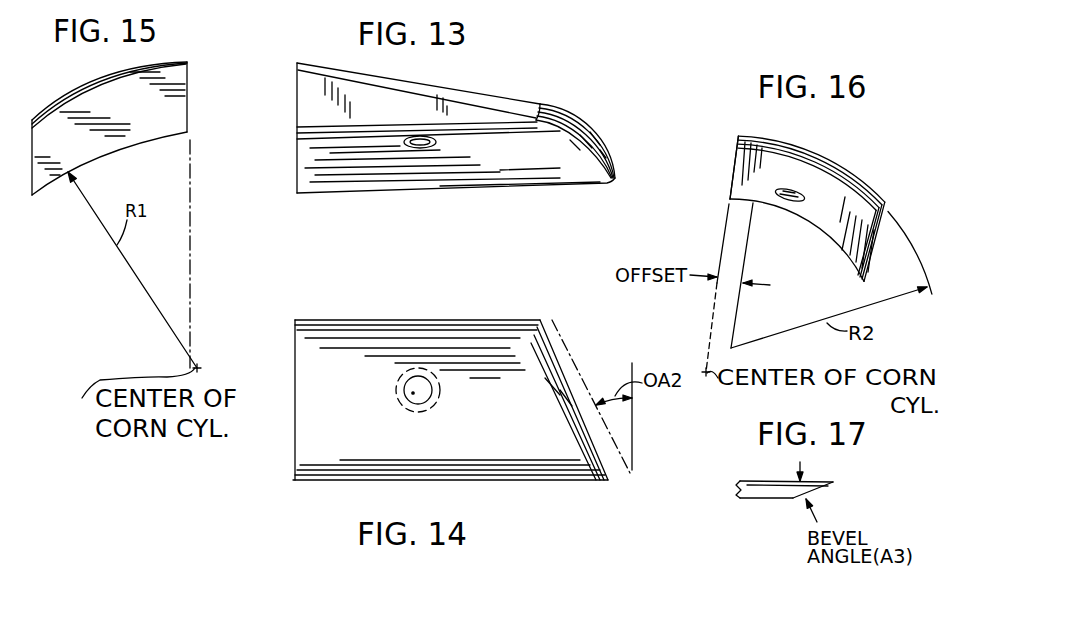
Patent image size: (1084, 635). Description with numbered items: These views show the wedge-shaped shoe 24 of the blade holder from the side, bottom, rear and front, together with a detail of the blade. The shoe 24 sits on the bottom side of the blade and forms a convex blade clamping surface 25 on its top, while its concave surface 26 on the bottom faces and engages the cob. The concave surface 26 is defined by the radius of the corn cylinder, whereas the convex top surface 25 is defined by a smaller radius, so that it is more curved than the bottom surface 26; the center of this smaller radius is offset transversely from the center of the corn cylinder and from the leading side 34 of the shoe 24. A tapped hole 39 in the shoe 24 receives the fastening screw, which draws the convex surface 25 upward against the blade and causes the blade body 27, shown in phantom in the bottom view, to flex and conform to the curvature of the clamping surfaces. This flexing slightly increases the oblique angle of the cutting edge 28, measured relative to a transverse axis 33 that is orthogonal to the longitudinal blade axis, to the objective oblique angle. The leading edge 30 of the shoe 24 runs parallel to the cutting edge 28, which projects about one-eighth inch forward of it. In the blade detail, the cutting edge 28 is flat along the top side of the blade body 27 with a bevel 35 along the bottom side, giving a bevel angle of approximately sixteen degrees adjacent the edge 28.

In FIG. 13, the shoe 24 is at (458, 150).
In FIG. 14, the shoe 24 is at (463, 401).
In FIG. 13, the convex blade clamping surface 25 is at (413, 83).
In FIG. 16, the convex blade clamping surface 25 is at (858, 179).
In FIG. 15, the concave surface 26 is at (42, 188).
In FIG. 13, the concave surface 26 is at (513, 153).
In FIG. 14, the concave surface 26 is at (343, 450).
In FIG. 16, the concave surface 26 is at (815, 201).
In FIG. 14, the blade body 27 is at (627, 481).
In FIG. 17, the blade body 27 is at (752, 499).
In FIG. 14, the cutting edge 28 is at (580, 368).
In FIG. 17, the cutting edge 28 is at (833, 484).
In FIG. 13, the leading edge of the shoe 30 is at (588, 135).
In FIG. 14, the transverse axis 33 is at (633, 367).
In FIG. 13, the leading side 34 is at (370, 112).
In FIG. 16, the leading side 34 is at (732, 169).
In FIG. 17, the bevel 35 is at (815, 493).
In FIG. 13, the tapped hole 39 is at (436, 144).
In FIG. 14, the tapped hole 39 is at (404, 392).
In FIG. 16, the tapped hole 39 is at (786, 190).